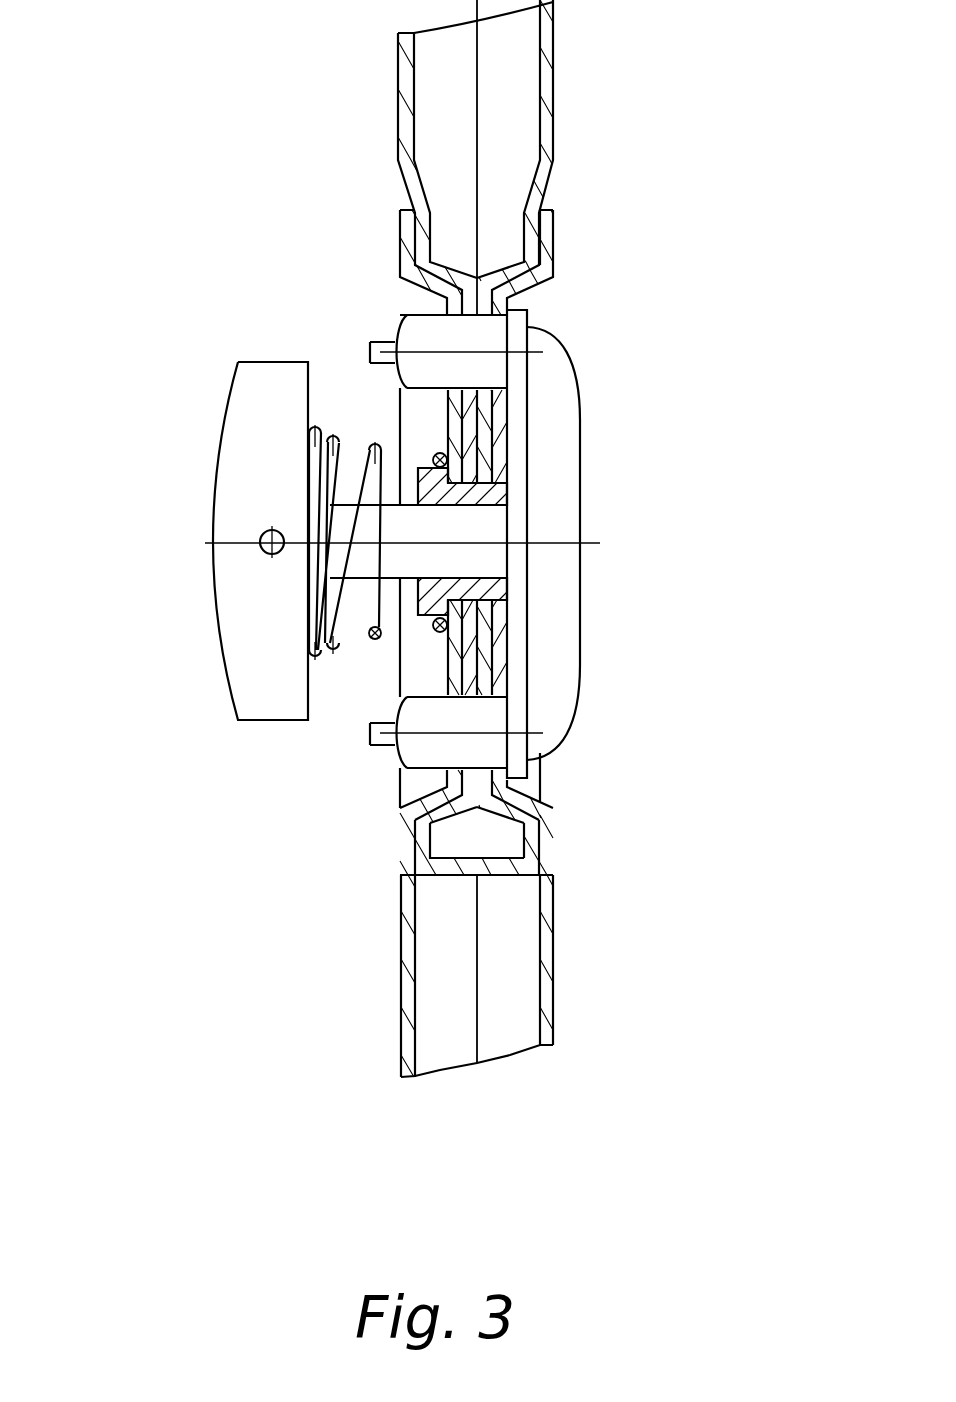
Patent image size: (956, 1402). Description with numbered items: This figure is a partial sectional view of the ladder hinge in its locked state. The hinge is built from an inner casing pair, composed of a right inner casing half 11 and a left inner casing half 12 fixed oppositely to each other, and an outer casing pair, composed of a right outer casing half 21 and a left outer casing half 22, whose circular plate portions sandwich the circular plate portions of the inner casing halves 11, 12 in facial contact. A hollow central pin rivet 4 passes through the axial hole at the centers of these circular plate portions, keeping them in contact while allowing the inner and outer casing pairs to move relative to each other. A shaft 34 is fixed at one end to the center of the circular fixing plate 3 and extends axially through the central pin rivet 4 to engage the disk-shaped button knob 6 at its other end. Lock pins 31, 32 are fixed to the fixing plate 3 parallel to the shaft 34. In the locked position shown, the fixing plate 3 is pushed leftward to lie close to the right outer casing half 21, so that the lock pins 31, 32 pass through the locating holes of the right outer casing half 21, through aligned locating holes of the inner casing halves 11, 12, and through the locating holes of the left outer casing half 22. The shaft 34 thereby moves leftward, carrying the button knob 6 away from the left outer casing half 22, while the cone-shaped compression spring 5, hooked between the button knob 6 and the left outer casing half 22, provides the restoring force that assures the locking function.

The fixing plate 3 is at (548, 465).
The central pin rivet 4 is at (418, 477).
The spring 5 is at (330, 635).
The button knob 6 is at (243, 432).
The right inner casing half 11 is at (547, 80).
The left inner casing half 12 is at (400, 102).
The right outer casing half 21 is at (552, 978).
The left outer casing half 22 is at (407, 1038).
The lock pin 31 is at (418, 757).
The lock pin 32 is at (402, 337).
The shaft 34 is at (380, 553).